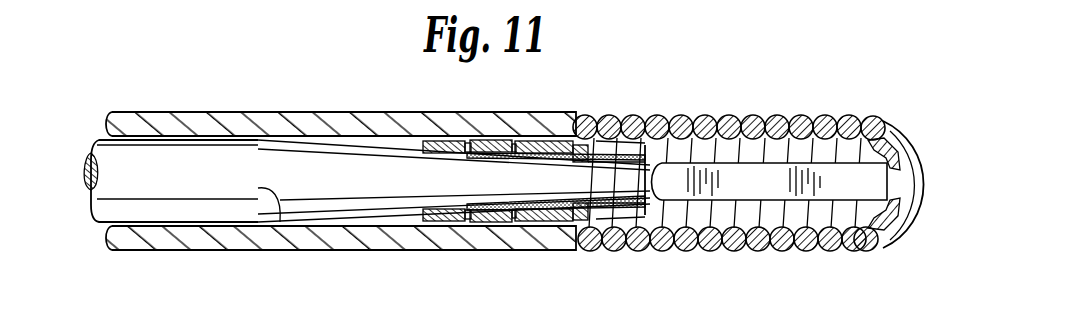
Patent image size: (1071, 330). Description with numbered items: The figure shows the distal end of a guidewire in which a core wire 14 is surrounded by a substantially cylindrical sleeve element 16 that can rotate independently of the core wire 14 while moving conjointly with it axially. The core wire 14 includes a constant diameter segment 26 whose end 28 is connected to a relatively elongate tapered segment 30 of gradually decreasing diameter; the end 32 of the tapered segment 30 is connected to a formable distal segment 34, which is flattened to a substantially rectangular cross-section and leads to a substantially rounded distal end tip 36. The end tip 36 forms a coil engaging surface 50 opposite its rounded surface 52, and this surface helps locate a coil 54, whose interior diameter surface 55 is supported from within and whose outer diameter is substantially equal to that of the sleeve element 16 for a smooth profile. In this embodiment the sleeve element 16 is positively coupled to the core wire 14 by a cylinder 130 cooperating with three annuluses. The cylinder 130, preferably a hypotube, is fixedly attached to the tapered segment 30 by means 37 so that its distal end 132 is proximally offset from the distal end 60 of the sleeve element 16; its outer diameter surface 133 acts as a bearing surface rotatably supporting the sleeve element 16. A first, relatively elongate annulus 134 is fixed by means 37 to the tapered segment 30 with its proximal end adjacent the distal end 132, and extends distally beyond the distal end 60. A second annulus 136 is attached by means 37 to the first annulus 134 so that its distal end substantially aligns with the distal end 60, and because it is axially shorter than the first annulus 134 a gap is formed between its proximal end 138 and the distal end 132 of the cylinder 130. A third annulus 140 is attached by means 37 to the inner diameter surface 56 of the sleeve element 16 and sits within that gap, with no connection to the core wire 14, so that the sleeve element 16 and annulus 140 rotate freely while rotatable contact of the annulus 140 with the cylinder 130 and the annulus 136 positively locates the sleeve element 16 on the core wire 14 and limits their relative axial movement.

The core wire 14 is at (147, 202).
The sleeve element 16 is at (290, 113).
The constant diameter segment 26 is at (188, 208).
The end of the constant diameter segment 28 is at (245, 250).
The tapered segment 30 is at (350, 186).
The end of the tapered segment 32 is at (637, 244).
The formable distal segment 34 is at (693, 249).
The distal end tip 36 is at (905, 159).
The attachment means 37 is at (470, 242).
The coil engaging surface 50 is at (853, 248).
The rounded surface 52 is at (907, 241).
The coil 54 is at (765, 247).
The interior diameter surface of the coil 55 is at (812, 114).
The inner diameter surface of the sleeve element 56 is at (378, 113).
The distal end of the sleeve element 60 is at (578, 117).
The cylinder 130 is at (395, 245).
The distal end of the cylinder 132 is at (468, 240).
The outer diameter surface of the cylinder 133 is at (430, 241).
The first annulus 134 is at (510, 205).
The second annulus 136 is at (527, 240).
The proximal end of the second annulus 138 is at (518, 140).
The third annulus 140 is at (478, 150).